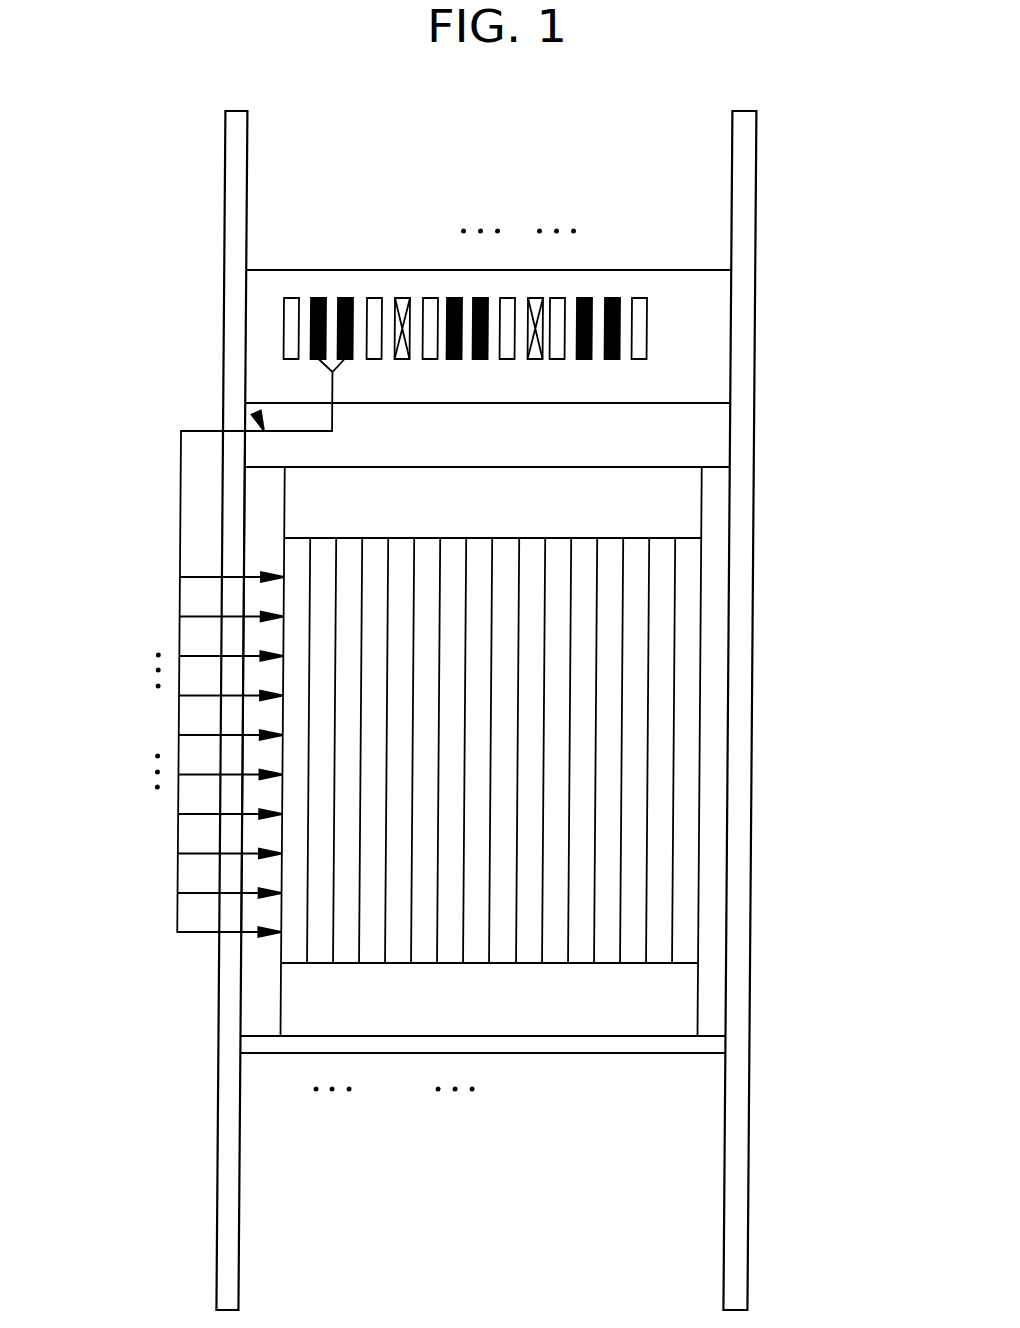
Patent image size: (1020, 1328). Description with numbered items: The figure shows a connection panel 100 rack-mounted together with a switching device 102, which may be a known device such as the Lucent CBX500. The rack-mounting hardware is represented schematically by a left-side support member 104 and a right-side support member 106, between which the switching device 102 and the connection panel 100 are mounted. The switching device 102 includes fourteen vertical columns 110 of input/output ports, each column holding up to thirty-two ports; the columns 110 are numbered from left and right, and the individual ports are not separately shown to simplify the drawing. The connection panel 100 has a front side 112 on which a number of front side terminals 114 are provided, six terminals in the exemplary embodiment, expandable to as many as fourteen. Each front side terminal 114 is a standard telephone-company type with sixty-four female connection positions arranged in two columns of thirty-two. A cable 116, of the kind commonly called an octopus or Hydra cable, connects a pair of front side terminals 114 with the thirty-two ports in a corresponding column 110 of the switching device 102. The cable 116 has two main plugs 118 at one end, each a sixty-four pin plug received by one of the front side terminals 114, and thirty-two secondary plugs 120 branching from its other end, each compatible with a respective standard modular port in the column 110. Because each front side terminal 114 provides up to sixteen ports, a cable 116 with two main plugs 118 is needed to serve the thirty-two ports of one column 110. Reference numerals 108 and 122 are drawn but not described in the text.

The connection panel 100 is at (284, 270).
The switching device 102 is at (700, 700).
The left-side support member 104 is at (221, 185).
The right-side support member 106 is at (752, 177).
The transmitter housing 108 is at (711, 470).
The vertical columns 110 is at (454, 963).
The front side 112 is at (710, 353).
The front side terminals 114 is at (459, 298).
The cable 116 is at (170, 697).
The main plugs 118 is at (254, 413).
The secondary plugs 120 is at (197, 773).
The scan driver block 122 is at (178, 483).